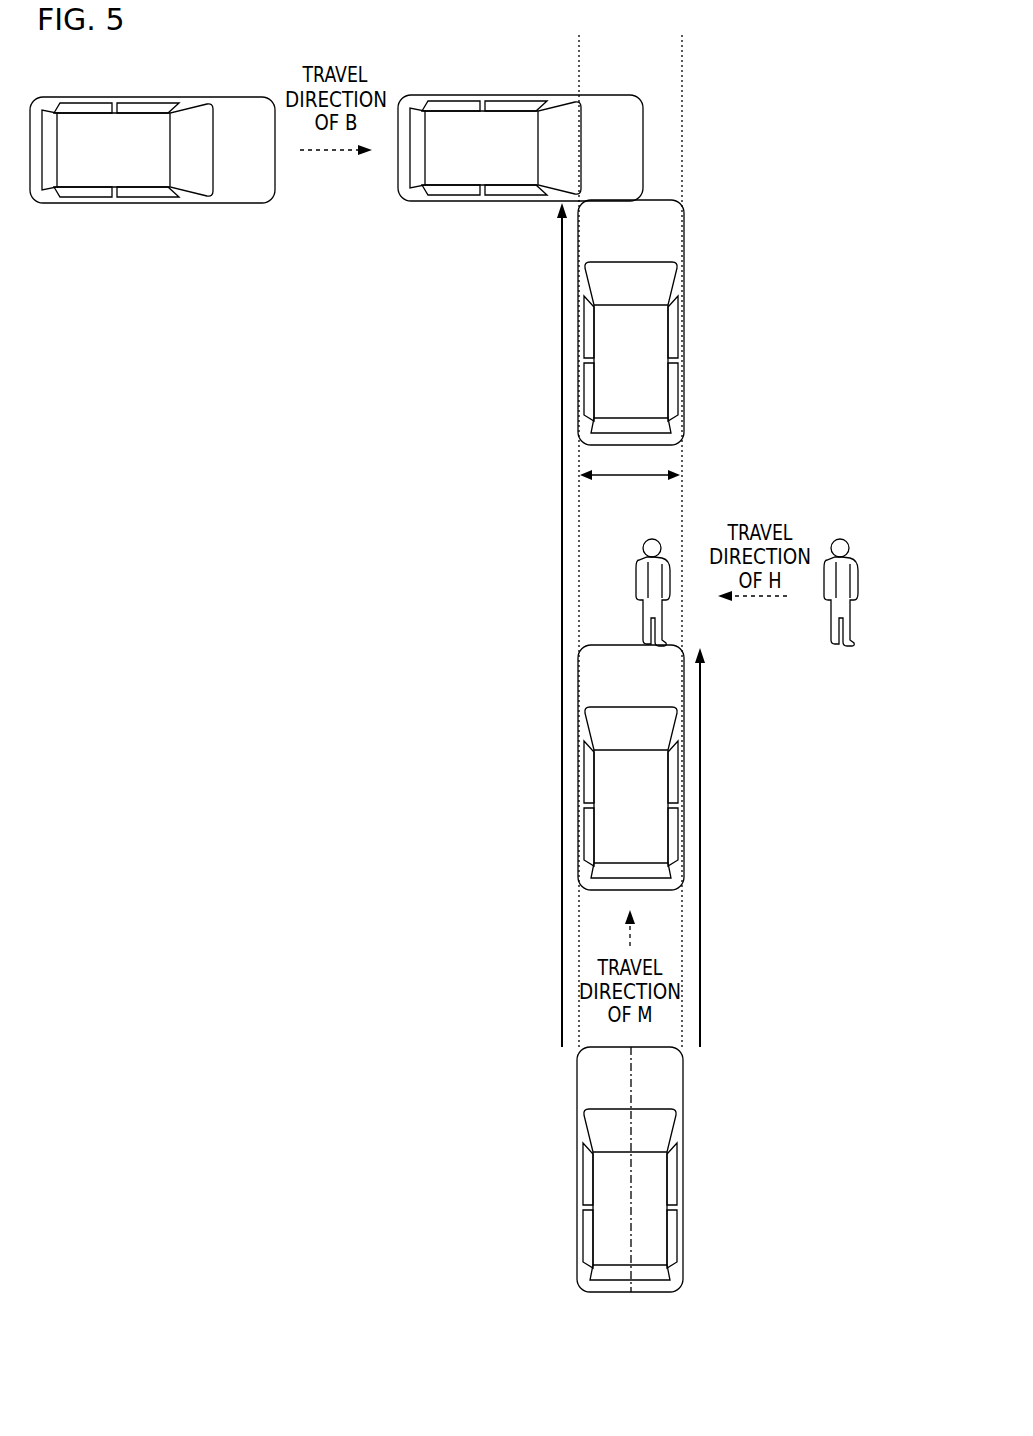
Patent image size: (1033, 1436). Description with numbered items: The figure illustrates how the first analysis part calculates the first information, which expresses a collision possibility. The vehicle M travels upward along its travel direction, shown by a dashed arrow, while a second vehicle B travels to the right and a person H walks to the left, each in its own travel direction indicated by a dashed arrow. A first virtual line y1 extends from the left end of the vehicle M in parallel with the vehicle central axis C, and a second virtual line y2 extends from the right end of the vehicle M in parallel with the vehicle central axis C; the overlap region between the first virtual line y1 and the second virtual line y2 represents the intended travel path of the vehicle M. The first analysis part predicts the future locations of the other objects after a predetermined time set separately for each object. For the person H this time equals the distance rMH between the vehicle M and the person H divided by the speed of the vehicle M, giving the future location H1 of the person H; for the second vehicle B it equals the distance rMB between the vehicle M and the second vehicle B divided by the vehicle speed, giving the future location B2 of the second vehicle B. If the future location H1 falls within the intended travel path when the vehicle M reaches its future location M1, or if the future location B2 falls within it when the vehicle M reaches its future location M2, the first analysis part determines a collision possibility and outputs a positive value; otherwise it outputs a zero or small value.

The second vehicle B is at (229, 205).
The future location of the second vehicle B2 is at (643, 168).
The vehicle M is at (684, 1100).
The future location of the vehicle relating to the person M1 is at (684, 770).
The future location of the vehicle relating to the second vehicle M2 is at (684, 345).
The person H is at (843, 538).
The future location of the person H1 is at (658, 540).
The vehicle central axis C is at (631, 1237).
The first virtual line y1 is at (577, 60).
The second virtual line y2 is at (684, 60).
The distance between the vehicle and the second vehicle rMB is at (562, 918).
The distance between the vehicle and the person rMH is at (700, 918).